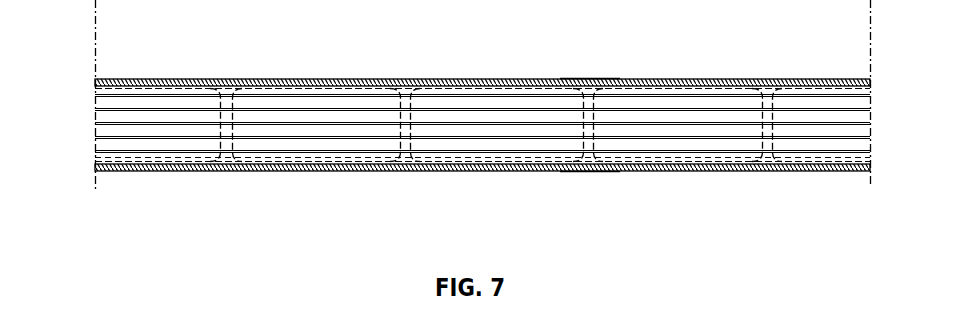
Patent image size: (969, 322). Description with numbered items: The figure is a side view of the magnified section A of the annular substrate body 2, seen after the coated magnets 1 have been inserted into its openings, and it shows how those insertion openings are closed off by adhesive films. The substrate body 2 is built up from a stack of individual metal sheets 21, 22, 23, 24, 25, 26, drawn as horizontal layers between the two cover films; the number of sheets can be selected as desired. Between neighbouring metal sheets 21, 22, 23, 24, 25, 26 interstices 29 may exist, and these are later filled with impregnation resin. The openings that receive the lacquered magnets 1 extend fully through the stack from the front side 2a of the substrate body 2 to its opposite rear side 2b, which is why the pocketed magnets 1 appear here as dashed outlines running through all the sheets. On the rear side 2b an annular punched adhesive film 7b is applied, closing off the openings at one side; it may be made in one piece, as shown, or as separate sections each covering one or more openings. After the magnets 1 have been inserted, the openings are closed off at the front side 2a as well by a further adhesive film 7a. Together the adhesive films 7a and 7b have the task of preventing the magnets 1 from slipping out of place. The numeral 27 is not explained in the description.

The magnet 1 is at (406, 150).
The substrate body 2 is at (885, 88).
The front side 2a is at (590, 192).
The rear side 2b is at (592, 59).
The adhesive film 7a is at (511, 176).
The adhesive film 7b is at (511, 74).
The metal sheet 21 is at (456, 166).
The metal sheet 22 is at (456, 78).
The metal sheet 23 is at (456, 134).
The metal sheet 24 is at (456, 112).
The metal sheet 25 is at (456, 98).
The metal sheet 26 is at (456, 80).
The gap between cells 27 is at (405, 87).
The interstice 29 is at (767, 153).
The section A is at (483, 95).